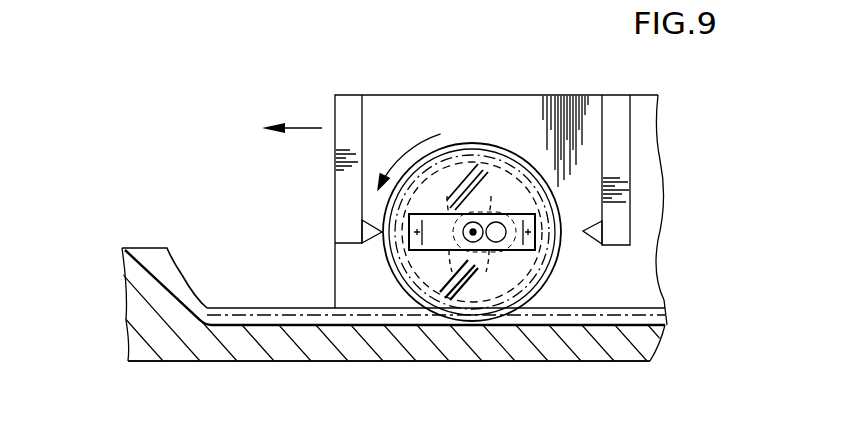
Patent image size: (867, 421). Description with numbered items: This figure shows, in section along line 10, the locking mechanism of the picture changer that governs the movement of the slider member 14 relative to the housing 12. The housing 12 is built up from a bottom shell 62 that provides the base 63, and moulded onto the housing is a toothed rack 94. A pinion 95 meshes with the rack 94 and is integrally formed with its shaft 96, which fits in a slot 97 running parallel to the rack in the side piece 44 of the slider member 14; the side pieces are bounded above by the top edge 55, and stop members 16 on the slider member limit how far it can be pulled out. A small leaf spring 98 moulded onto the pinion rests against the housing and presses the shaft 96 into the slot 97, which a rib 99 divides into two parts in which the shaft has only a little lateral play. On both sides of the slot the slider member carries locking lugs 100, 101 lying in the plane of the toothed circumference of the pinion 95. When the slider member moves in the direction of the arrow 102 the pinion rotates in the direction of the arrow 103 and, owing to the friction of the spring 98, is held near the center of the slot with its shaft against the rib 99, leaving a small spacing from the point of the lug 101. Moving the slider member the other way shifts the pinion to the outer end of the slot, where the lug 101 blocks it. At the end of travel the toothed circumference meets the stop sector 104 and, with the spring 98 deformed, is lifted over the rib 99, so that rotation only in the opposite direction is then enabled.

The section line 10 is at (78, 188).
The housing 12 is at (191, 372).
The slider member 14 is at (466, 86).
The stop members 16 is at (620, 110).
The side piece 44 is at (643, 140).
The top edge 55 is at (598, 94).
The bottom shell 62 is at (135, 300).
The base 63 is at (542, 362).
The toothed rack 94 is at (305, 313).
The pinion 95 is at (498, 155).
The shaft 96 is at (453, 256).
The slot 97 is at (447, 199).
The small leaf spring 98 is at (513, 250).
The rib 99 is at (492, 205).
The locking lug 100 is at (597, 233).
The locking lug 101 is at (362, 232).
The arrow 102 is at (294, 127).
The arrow 103 is at (412, 148).
The stop sector 104 is at (175, 267).